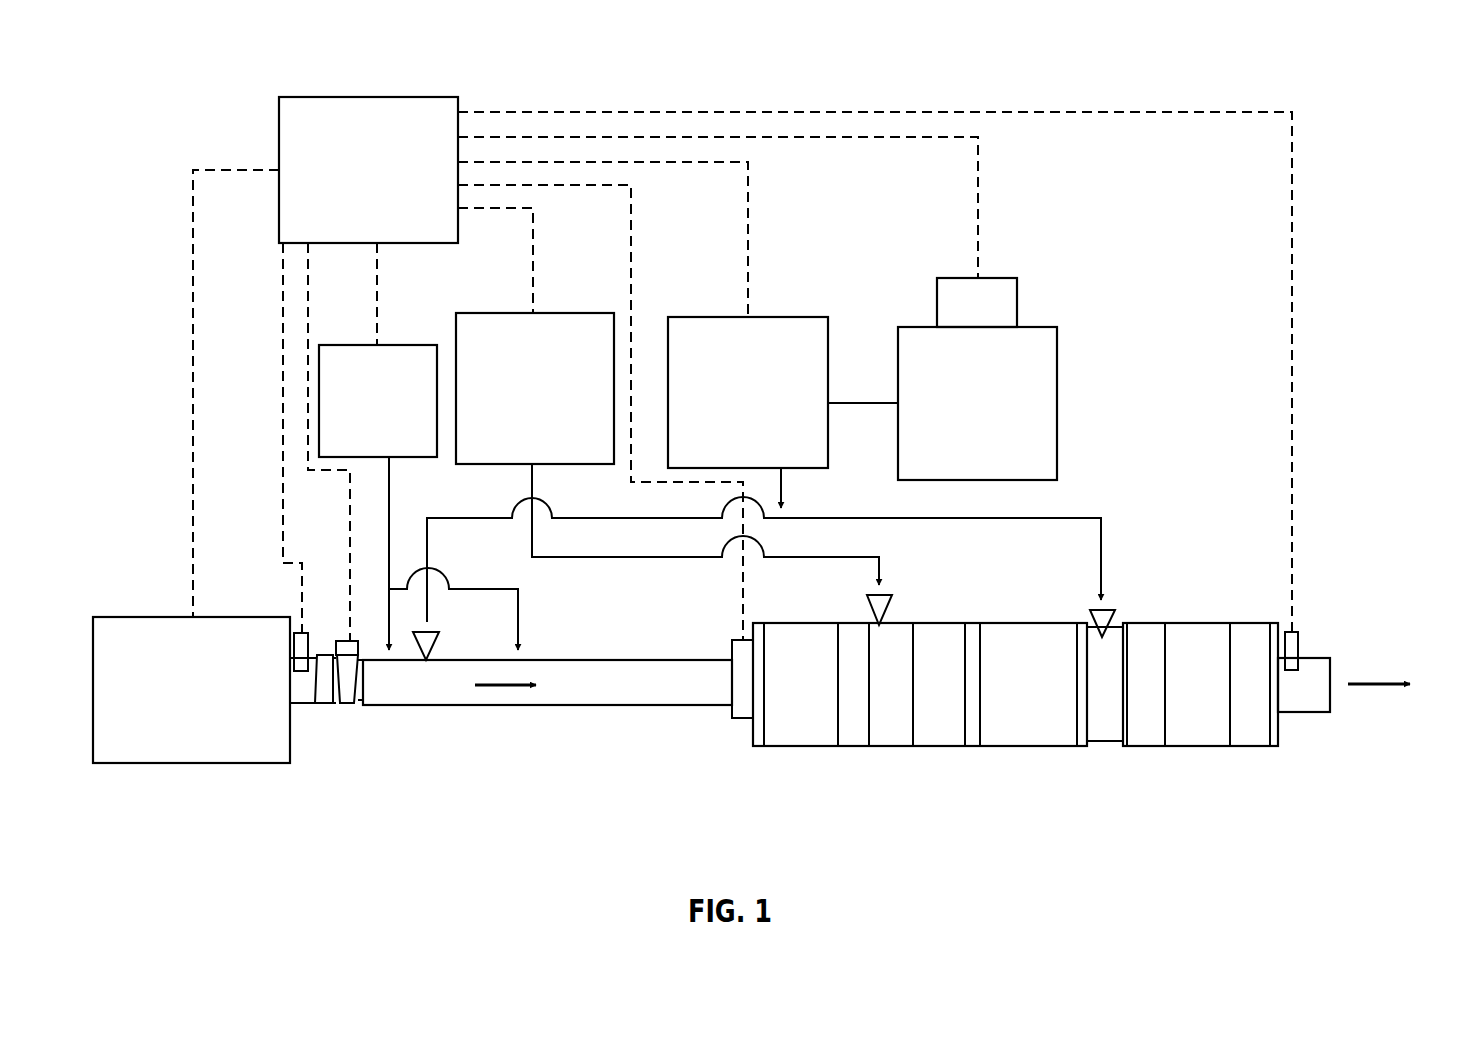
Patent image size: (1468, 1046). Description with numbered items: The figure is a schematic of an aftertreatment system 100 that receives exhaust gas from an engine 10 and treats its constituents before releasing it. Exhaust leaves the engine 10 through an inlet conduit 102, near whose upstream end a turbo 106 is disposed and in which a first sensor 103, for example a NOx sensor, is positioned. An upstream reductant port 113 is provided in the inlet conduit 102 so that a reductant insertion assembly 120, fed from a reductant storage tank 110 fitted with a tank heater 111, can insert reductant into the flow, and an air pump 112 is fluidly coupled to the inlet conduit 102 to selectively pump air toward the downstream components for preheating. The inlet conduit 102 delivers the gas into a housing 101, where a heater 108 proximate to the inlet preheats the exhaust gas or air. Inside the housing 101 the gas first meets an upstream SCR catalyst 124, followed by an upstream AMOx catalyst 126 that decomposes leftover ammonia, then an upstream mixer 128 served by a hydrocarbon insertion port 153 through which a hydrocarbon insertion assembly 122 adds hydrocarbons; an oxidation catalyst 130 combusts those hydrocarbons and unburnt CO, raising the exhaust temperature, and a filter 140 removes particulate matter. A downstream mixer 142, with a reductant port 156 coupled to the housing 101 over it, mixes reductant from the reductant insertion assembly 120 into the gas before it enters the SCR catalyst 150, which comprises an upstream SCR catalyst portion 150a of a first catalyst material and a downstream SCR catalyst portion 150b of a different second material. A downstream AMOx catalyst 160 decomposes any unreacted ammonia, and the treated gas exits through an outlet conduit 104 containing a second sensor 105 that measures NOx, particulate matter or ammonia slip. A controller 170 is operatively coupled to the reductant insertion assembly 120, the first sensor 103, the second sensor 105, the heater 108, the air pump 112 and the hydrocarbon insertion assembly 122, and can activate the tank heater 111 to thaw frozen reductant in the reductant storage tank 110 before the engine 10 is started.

The aftertreatment system 100 is at (1295, 50).
The engine 10 is at (174, 742).
The controller 170 is at (397, 215).
The inlet conduit 102 is at (458, 698).
The first sensor 103 is at (302, 672).
The turbo 106 is at (345, 690).
The heater 108 is at (740, 718).
The housing 101 is at (760, 750).
The upstream SCR catalyst 124 is at (812, 745).
The upstream AMOx catalyst 126 is at (858, 745).
The upstream mixer 128 is at (905, 745).
The oxidation catalyst 130 is at (945, 745).
The filter 140 is at (1038, 745).
The downstream mixer 142 is at (1108, 730).
The SCR catalyst 150 is at (1185, 694).
The upstream SCR catalyst portion 150a is at (1147, 738).
The downstream SCR catalyst portion 150b is at (1192, 630).
The downstream AMOx catalyst 160 is at (1250, 738).
The outlet conduit 104 is at (1308, 713).
The second sensor 105 is at (1297, 640).
The reductant storage tank 110 is at (952, 470).
The tank heater 111 is at (952, 316).
The air pump 112 is at (353, 449).
The upstream reductant port 113 is at (437, 642).
The reductant insertion assembly 120 is at (723, 463).
The hydrocarbon insertion assembly 122 is at (510, 458).
The hydrocarbon insertion port 153 is at (885, 608).
The reductant port 156 is at (1108, 605).